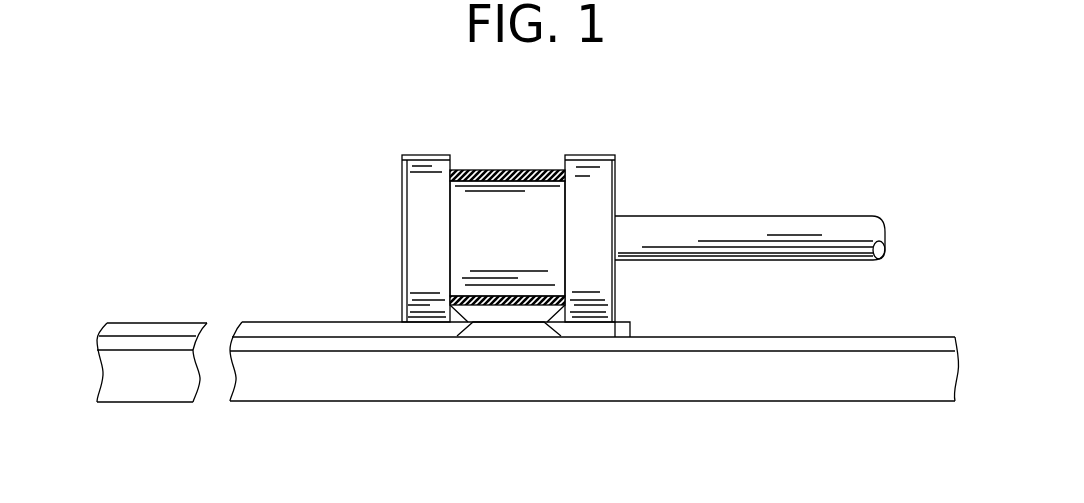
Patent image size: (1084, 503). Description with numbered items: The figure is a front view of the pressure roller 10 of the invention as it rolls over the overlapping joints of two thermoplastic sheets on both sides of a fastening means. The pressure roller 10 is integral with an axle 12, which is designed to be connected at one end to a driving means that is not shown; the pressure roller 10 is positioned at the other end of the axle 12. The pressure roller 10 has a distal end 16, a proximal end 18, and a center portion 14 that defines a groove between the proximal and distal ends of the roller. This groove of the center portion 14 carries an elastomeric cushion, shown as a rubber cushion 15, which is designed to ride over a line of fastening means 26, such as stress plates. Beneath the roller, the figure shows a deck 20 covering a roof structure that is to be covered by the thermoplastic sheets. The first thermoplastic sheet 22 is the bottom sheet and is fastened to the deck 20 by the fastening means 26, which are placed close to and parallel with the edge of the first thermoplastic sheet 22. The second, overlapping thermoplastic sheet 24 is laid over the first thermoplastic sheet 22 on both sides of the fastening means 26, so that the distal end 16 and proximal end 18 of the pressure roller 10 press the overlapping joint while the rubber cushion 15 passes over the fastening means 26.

The pressure roller 10 is at (378, 232).
The axle 12 is at (768, 217).
The center portion 14 is at (543, 205).
The rubber cushion 15 is at (512, 168).
The distal end 16 is at (424, 148).
The proximal end 18 is at (600, 177).
The deck 20 is at (917, 390).
The first thermoplastic sheet 22 is at (897, 345).
The second thermoplastic sheet 24 is at (313, 328).
The fastening means 26 is at (508, 330).